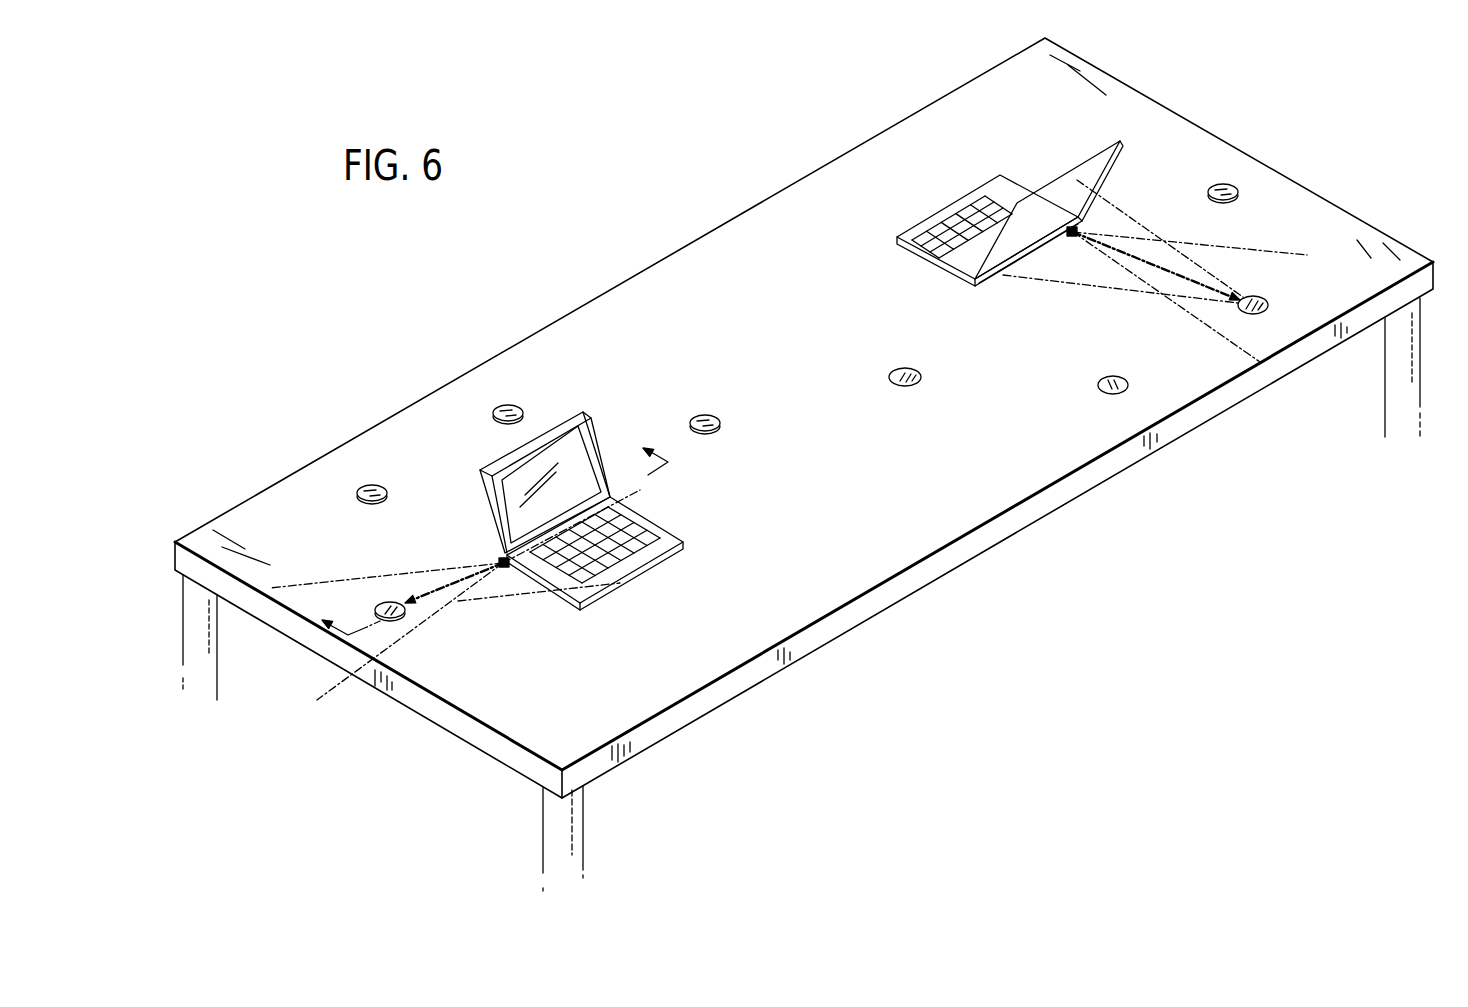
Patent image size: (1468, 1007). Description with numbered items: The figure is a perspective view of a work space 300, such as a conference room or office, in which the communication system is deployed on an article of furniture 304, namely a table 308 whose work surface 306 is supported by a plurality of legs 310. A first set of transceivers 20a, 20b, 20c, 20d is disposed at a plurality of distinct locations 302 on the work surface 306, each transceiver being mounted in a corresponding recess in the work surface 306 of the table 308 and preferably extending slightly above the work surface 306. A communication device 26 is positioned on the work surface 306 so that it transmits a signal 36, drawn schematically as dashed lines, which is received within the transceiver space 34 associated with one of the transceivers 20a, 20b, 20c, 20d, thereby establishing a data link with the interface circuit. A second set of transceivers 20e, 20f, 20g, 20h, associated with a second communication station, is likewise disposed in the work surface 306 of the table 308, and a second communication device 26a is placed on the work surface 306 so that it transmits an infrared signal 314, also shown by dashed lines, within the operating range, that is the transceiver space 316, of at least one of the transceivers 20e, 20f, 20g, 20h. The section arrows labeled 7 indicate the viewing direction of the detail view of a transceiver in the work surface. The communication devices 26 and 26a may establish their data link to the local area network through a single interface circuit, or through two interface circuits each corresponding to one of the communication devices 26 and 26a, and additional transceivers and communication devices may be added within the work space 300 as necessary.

The work space 300 is at (635, 185).
The article of furniture 304 is at (1203, 115).
The work surface 306 is at (757, 331).
The table 308 is at (932, 570).
The legs 310 is at (218, 650).
The communication device 26 is at (650, 572).
The second communication device 26a is at (1045, 175).
The transceiver space 34 is at (510, 593).
The signal 36 is at (405, 572).
The view direction of FIG. 7 is at (495, 526).
The infrared signal 314 is at (1190, 238).
The transceiver space 316 is at (1085, 285).
The distinct locations 302 is at (500, 400).
The transceiver 20a is at (400, 620).
The transceiver 20b is at (390, 493).
The transceiver 20c is at (524, 408).
The transceiver 20d is at (705, 432).
The transceiver 20e is at (905, 388).
The transceiver 20f is at (1123, 374).
The transceiver 20g is at (1270, 306).
The transceiver 20h is at (1227, 201).